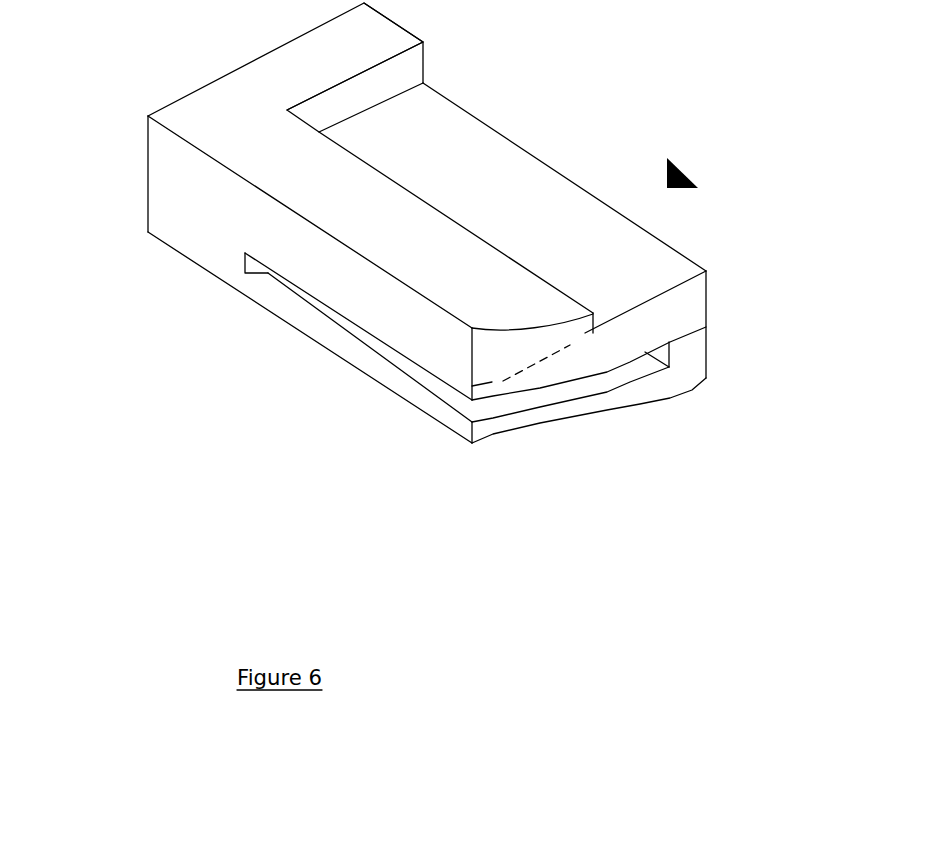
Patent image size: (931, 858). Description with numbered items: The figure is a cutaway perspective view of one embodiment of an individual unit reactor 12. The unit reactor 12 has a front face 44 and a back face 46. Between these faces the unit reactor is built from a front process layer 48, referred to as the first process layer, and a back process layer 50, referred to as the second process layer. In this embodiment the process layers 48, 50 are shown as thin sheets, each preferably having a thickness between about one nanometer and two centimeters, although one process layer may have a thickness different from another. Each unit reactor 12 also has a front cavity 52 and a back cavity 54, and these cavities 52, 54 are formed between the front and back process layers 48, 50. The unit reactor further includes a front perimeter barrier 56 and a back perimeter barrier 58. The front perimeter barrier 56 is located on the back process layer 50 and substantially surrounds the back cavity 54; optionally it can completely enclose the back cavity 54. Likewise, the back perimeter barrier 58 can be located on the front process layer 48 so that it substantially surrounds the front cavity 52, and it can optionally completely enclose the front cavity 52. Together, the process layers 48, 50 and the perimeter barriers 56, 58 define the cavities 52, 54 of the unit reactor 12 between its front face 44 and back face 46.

The unit reactor 12 is at (683, 172).
The front face 44 is at (170, 250).
The back face 46 is at (707, 297).
The front process layer 48 is at (362, 363).
The back process layer 50 is at (613, 348).
The front cavity 52 is at (250, 273).
The back cavity 54 is at (423, 49).
The front perimeter barrier 56 is at (484, 305).
The back perimeter barrier 58 is at (687, 360).